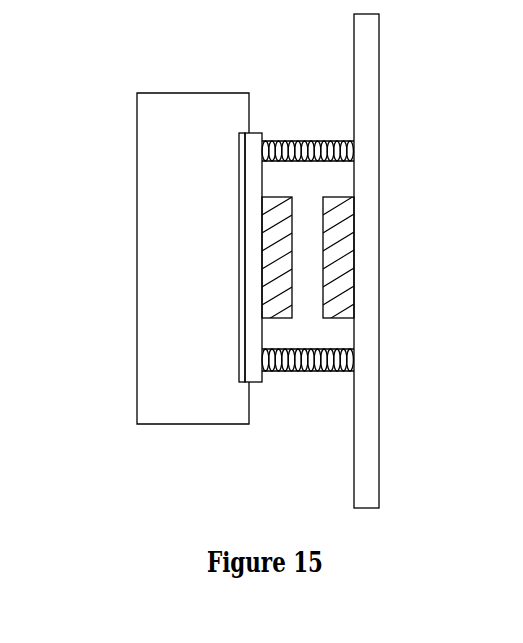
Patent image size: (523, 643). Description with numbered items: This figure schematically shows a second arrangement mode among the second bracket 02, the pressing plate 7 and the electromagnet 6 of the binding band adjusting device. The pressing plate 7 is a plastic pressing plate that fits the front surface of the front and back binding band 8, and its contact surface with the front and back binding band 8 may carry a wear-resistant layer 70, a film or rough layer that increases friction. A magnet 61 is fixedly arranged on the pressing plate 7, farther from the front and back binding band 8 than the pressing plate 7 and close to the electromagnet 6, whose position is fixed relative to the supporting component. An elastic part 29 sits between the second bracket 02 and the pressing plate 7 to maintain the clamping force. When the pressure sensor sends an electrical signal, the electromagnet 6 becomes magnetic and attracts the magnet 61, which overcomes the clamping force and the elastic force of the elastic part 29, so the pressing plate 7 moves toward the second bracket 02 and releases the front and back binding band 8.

The front and back binding band 8 is at (147, 113).
The wear-resistant layer 70 is at (239, 162).
The pressing plate 7 is at (250, 228).
The magnet 61 is at (280, 291).
The electromagnet 6 is at (338, 253).
The elastic part 29 is at (356, 356).
The second bracket 02 is at (374, 126).